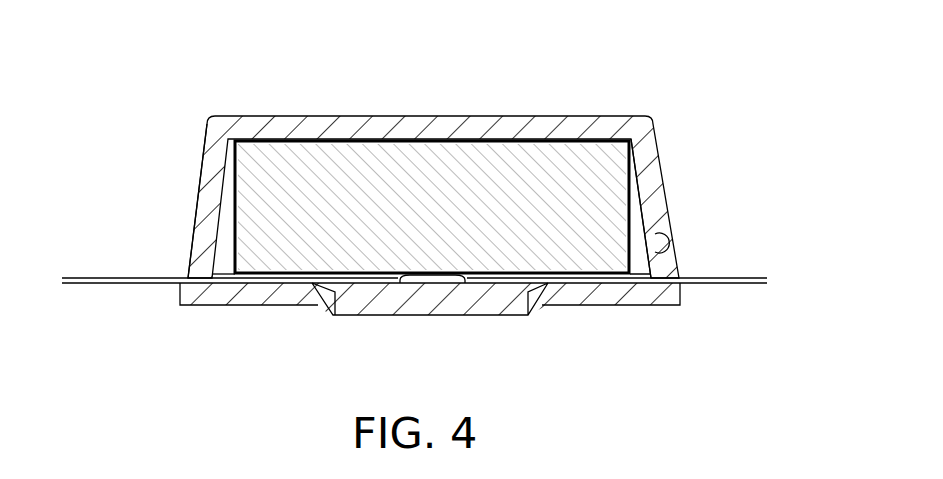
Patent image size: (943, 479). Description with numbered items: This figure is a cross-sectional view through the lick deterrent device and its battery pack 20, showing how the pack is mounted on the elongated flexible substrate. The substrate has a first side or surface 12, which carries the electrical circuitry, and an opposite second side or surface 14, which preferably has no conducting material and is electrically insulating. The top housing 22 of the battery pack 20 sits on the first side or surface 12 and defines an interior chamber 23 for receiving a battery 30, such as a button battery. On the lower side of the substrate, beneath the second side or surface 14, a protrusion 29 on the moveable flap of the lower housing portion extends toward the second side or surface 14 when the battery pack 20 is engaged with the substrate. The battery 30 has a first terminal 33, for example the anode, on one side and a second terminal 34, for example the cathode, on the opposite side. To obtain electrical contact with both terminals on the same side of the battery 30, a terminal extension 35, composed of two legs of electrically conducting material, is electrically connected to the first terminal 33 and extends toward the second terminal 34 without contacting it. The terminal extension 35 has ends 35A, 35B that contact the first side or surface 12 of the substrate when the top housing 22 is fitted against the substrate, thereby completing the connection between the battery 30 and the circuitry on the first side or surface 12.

The first side or surface 12 is at (90, 277).
The second side or surface 14 is at (101, 285).
The battery pack 20 is at (543, 118).
The top housing 22 is at (204, 153).
The interior chamber 23 is at (641, 232).
The protrusion 29 is at (448, 285).
The battery 30 is at (470, 144).
The first terminal 33 is at (348, 146).
The second terminal 34 is at (378, 279).
The terminal extension 35 is at (632, 188).
The end of terminal extension 35A is at (218, 272).
The end of terminal extension 35B is at (641, 258).